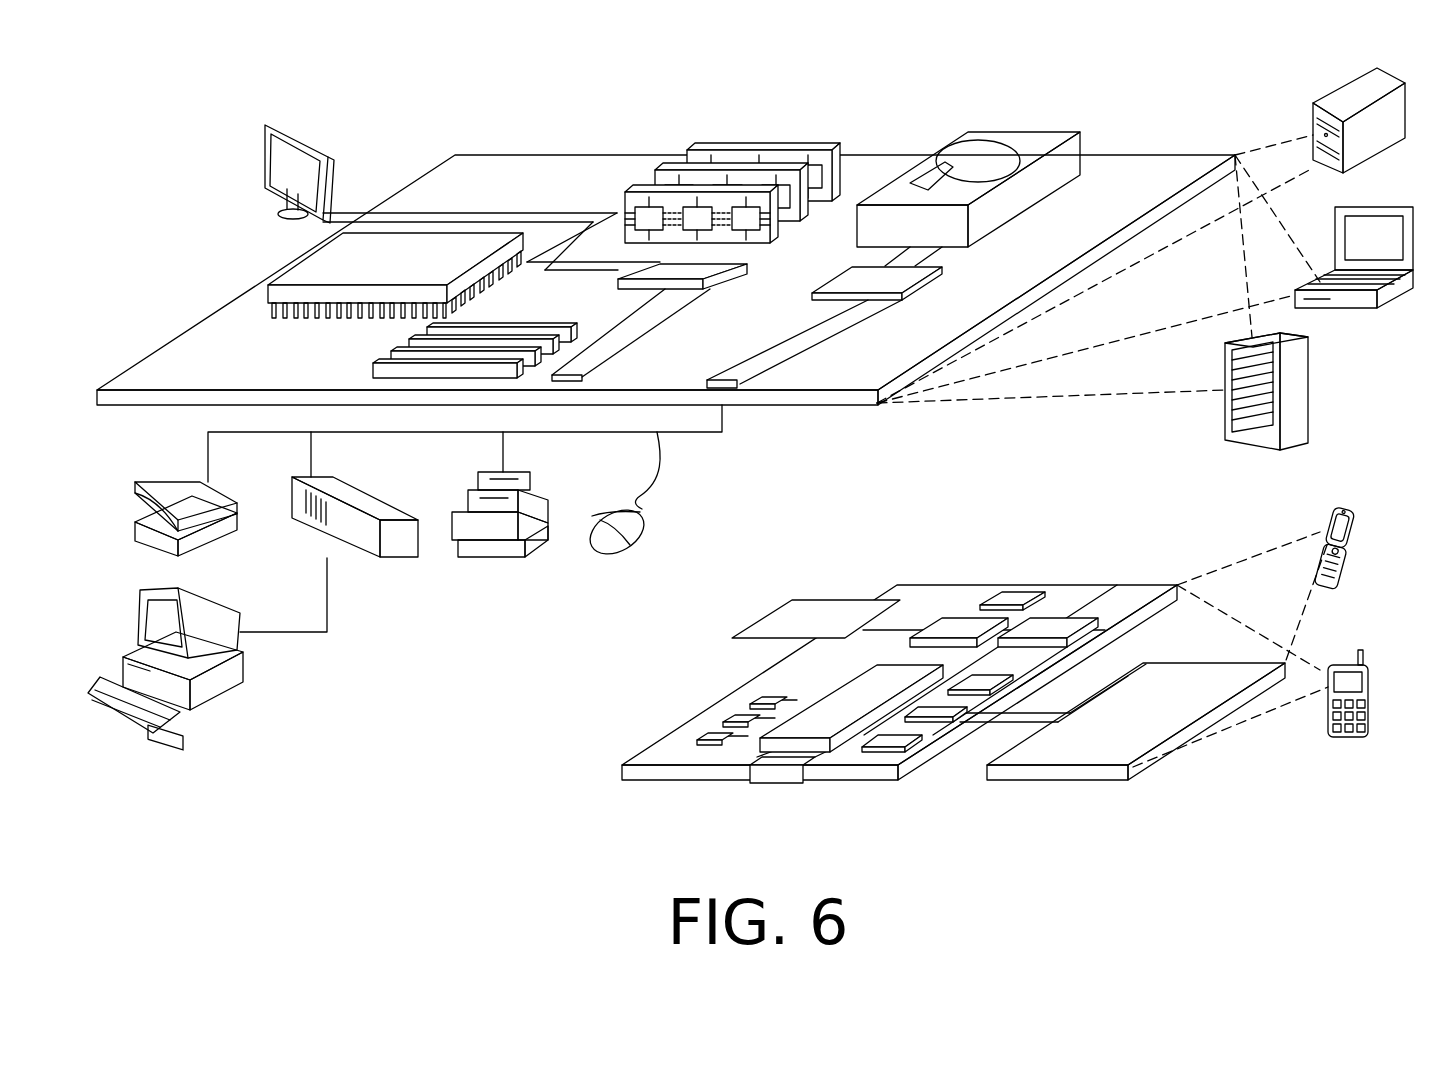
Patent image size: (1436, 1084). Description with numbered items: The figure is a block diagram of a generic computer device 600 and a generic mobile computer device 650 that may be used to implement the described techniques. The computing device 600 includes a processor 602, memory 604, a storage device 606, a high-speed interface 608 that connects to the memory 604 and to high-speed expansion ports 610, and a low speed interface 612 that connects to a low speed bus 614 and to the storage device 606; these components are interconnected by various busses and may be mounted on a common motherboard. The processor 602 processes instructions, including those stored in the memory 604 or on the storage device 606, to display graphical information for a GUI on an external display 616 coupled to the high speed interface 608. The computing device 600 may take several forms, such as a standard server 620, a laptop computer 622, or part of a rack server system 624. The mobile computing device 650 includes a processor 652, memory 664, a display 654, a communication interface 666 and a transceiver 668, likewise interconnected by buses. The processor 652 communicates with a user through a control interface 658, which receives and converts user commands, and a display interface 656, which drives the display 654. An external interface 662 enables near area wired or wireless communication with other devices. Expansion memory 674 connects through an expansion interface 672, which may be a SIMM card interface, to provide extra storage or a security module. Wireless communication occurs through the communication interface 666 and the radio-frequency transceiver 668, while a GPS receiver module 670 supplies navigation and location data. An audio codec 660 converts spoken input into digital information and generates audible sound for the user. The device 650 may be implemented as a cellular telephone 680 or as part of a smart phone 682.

The computing device 600 is at (404, 98).
The processor 602 is at (300, 263).
The memory 604 is at (767, 150).
The storage device 606 is at (1013, 132).
The high-speed interface 608 is at (697, 276).
The high-speed expansion ports 610 is at (402, 347).
The low speed interface 612 is at (848, 278).
The low speed bus 614 is at (732, 370).
The display 616 is at (272, 124).
The standard server 620 is at (1336, 100).
The laptop computer 622 is at (1392, 205).
The rack server system 624 is at (1310, 390).
The mobile computer device 650 is at (570, 797).
The processor 652 is at (818, 714).
The display 654 is at (1176, 680).
The display interface 656 is at (897, 738).
The control interface 658 is at (943, 711).
The audio codec 660 is at (980, 677).
The external interface 662 is at (779, 772).
The memory 664 is at (728, 715).
The communication interface 666 is at (960, 620).
The transceiver 668 is at (1057, 622).
The GPS receiver module 670 is at (1013, 597).
The expansion interface 672 is at (878, 600).
The expansion memory 674 is at (790, 600).
The cellular telephone 680 is at (1330, 508).
The smart phone 682 is at (1343, 662).